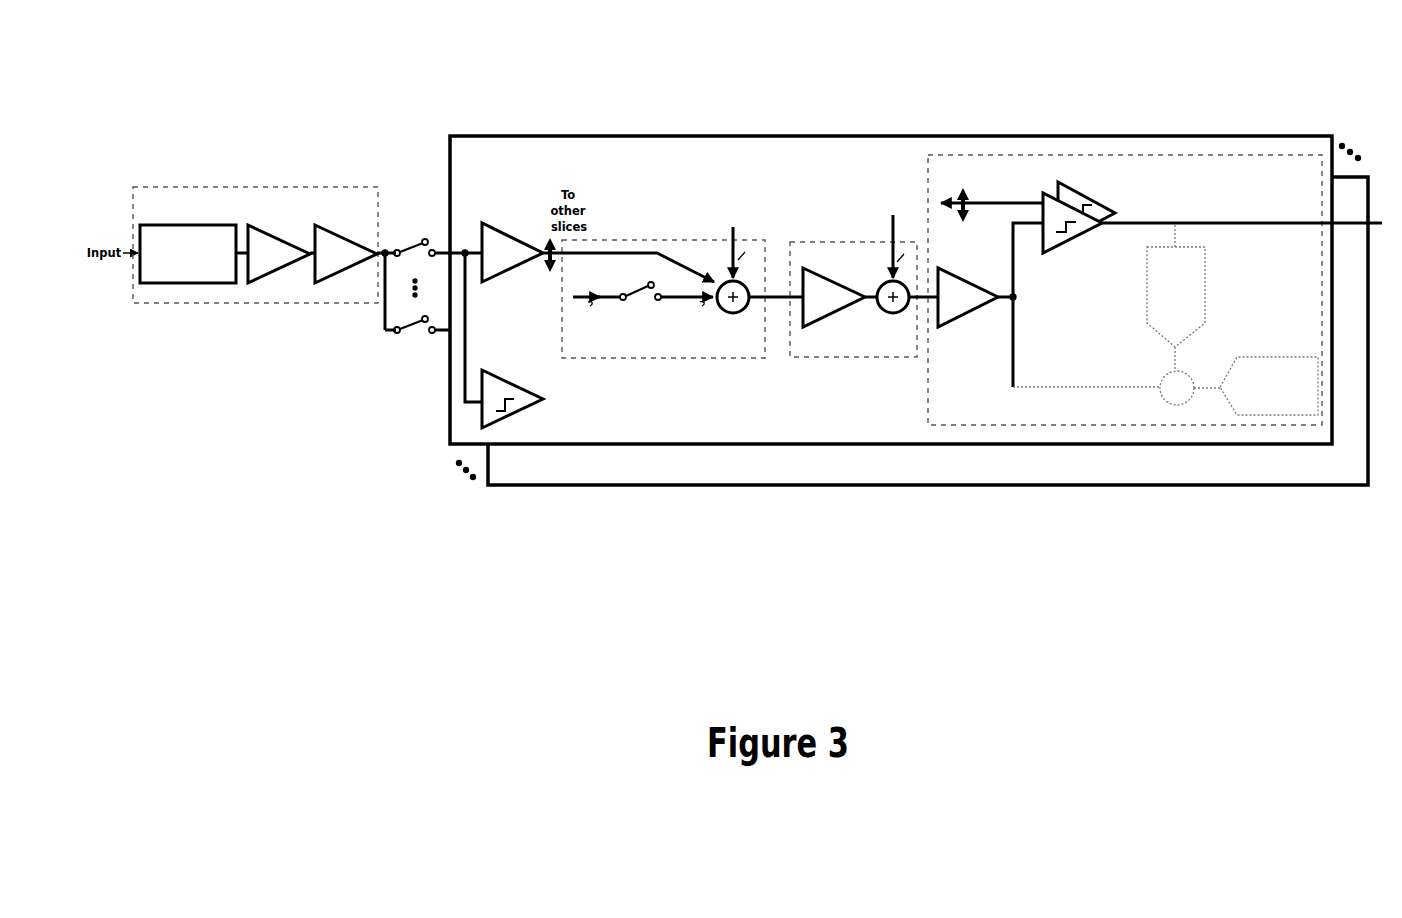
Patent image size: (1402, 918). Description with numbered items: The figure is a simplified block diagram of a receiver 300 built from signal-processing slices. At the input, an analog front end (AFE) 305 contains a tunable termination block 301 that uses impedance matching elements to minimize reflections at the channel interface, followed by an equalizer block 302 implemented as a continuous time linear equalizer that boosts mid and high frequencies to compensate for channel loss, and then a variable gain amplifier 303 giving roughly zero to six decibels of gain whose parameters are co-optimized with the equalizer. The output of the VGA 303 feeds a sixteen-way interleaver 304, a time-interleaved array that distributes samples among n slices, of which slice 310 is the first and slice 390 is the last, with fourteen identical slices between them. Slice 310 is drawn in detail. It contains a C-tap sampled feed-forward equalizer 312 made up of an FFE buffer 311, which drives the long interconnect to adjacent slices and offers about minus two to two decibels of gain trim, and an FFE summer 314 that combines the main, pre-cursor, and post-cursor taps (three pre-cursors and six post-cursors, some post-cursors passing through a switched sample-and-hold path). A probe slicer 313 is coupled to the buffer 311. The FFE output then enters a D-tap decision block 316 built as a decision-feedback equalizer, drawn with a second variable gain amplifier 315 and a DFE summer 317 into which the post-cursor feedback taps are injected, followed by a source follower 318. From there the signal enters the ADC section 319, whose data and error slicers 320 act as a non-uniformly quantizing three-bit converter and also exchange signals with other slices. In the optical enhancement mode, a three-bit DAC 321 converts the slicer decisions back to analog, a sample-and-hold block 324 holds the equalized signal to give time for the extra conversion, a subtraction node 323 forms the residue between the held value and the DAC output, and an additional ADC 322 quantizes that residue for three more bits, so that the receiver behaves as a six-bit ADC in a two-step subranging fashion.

The signal-processing receiver block diagram 300 is at (771, 38).
The termination block 301 is at (188, 254).
The equalizer block 302 is at (279, 244).
The variable gain amplifier 303 is at (346, 244).
The 16-way interleaver 304 is at (404, 236).
The analog front end 305 is at (308, 187).
The slice 310 is at (880, 136).
The FFE buffer 311 is at (512, 235).
The feed-forward equalizer 312 is at (637, 240).
The probe slicer 313 is at (532, 382).
The FFE summer 314 is at (733, 315).
The variable gain amplifier VGA2 315 is at (834, 291).
The decision feedback equalizer block 316 is at (857, 357).
The DFE summer 317 is at (897, 315).
The source follower SF2 318 is at (968, 291).
The ADC section 319 is at (1232, 155).
The data and error slicers 320 is at (1115, 204).
The 3-bit DAC 321 is at (1205, 285).
The ADC 322 is at (1268, 357).
The subtraction block 323 is at (1165, 377).
The sample and hold block 324 is at (1045, 388).
The last slice 390 is at (752, 487).